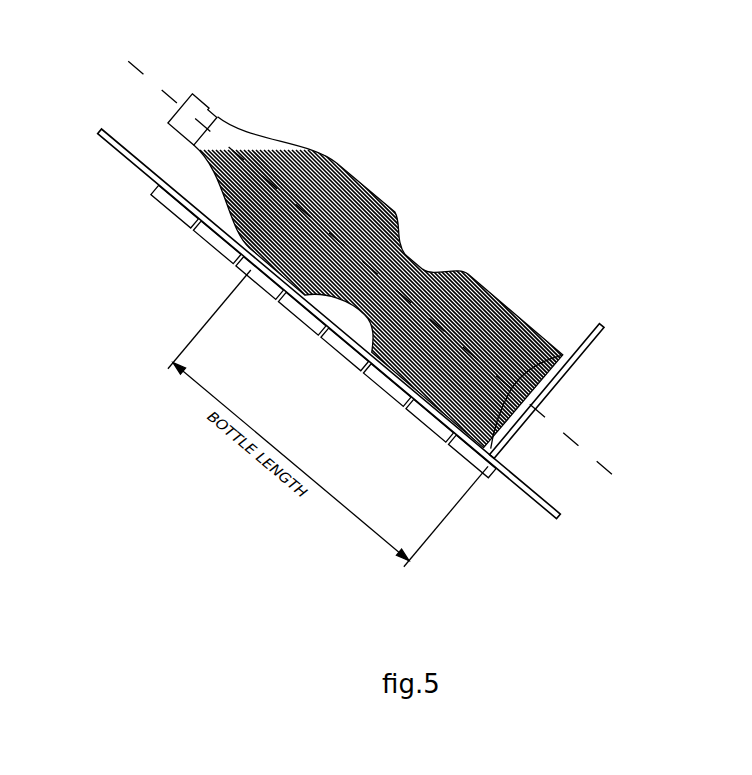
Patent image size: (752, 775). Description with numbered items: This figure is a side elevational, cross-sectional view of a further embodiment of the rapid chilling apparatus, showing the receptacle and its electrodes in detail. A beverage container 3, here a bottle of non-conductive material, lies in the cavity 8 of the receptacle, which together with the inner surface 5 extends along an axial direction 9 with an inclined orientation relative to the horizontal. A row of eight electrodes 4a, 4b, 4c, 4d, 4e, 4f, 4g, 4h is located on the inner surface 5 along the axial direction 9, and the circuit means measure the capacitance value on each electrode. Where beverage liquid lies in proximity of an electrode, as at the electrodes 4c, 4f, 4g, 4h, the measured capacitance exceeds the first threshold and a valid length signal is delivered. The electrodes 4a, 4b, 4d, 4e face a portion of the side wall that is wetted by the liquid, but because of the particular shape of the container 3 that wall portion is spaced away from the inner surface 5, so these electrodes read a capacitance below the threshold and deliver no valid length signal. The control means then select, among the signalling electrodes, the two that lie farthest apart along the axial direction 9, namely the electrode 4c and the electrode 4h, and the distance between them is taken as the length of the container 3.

The beverage container 3 is at (422, 263).
The electrode 4a is at (158, 190).
The electrode 4b is at (198, 235).
The electrode 4c is at (240, 271).
The electrode 4d is at (282, 307).
The electrode 4e is at (324, 343).
The electrode 4f is at (366, 379).
The electrode 4g is at (409, 415).
The electrode 4h is at (451, 451).
The inner surface 5 is at (148, 157).
The cavity 8 is at (277, 132).
The axial direction 9 is at (163, 88).